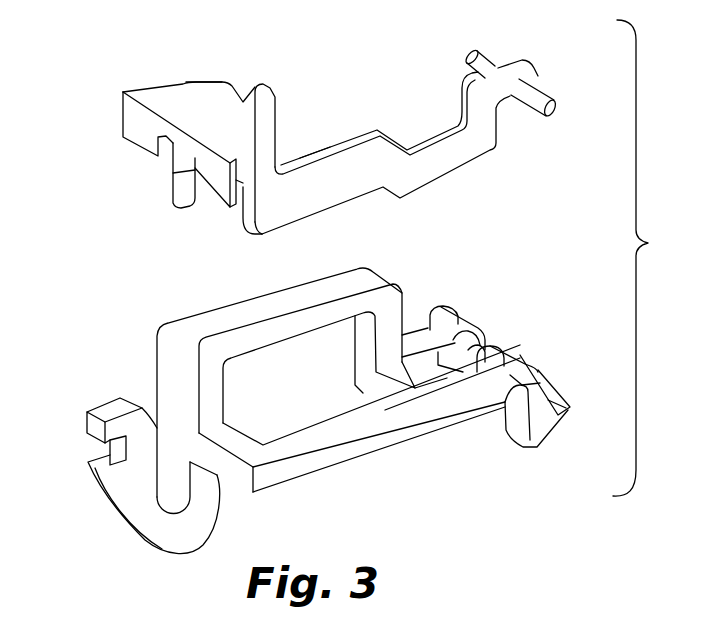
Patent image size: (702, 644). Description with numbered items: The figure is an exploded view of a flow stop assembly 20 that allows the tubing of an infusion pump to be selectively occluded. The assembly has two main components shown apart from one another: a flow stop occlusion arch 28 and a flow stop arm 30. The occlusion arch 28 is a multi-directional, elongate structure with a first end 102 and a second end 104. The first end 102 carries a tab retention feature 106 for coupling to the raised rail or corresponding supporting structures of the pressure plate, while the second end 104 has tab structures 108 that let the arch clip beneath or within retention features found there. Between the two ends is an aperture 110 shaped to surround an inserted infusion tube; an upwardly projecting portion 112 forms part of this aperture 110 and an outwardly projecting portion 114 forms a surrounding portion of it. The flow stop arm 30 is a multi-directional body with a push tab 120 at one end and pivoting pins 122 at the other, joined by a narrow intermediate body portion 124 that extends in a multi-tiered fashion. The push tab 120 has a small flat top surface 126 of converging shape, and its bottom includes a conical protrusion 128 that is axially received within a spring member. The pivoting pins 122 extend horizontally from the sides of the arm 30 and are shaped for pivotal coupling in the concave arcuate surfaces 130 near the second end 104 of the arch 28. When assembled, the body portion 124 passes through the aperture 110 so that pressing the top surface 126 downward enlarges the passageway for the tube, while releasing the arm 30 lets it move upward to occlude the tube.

The flow stop assembly 20 is at (645, 258).
The flow stop occlusion arch 28 is at (170, 358).
The flow stop arm 30 is at (268, 213).
The first end 102 is at (90, 487).
The second end 104 is at (550, 456).
The tab retention feature 106 is at (105, 452).
The tab structures 108 is at (507, 350).
The aperture 110 is at (305, 403).
The upwardly projecting portion 112 is at (337, 307).
The outwardly projecting portion 114 is at (387, 433).
The push tab 120 is at (187, 100).
The pivoting pin 122 is at (533, 108).
The intermediate body portion 124 is at (393, 98).
The top surface 126 is at (217, 103).
The conical protrusion 128 is at (180, 193).
The concave arcuate surfaces 130 is at (313, 157).